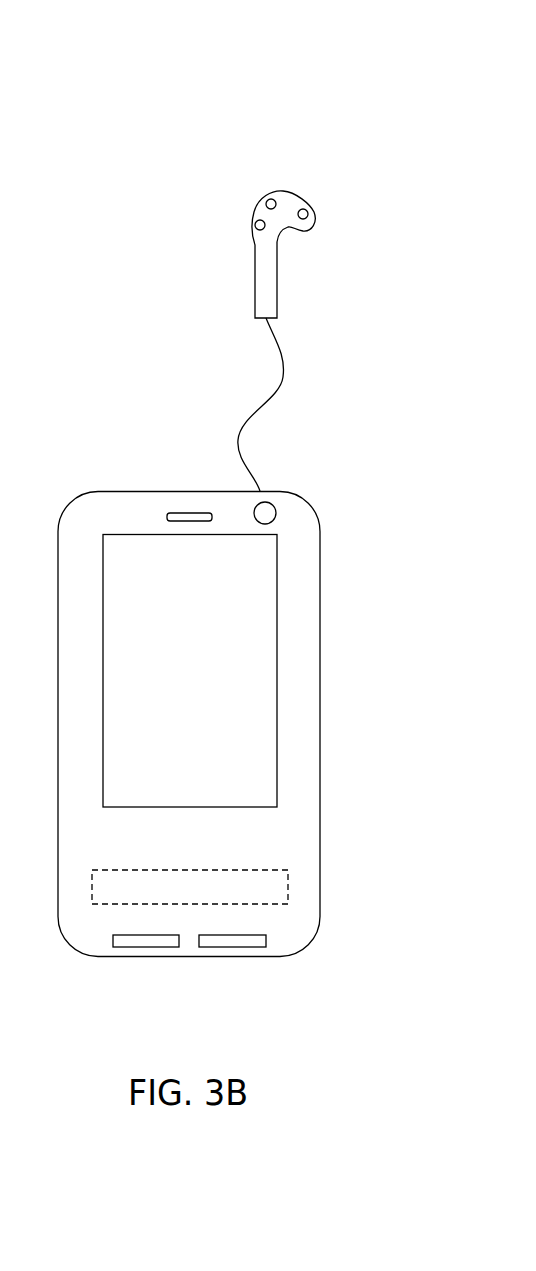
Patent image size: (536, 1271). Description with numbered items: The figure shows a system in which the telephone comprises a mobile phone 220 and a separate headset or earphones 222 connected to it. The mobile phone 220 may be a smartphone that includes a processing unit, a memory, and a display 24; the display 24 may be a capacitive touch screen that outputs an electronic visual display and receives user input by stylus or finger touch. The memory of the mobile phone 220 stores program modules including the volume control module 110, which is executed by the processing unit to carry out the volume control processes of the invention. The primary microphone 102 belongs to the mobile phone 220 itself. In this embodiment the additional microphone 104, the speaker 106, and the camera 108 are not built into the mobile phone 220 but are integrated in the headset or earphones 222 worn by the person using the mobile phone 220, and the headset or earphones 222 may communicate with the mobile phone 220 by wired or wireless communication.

The mobile phone 220 is at (128, 492).
The headset or earphones 222 is at (296, 177).
The additional microphone 104 is at (267, 200).
The speaker 106 is at (308, 214).
The camera 108 is at (255, 224).
The display 24 is at (277, 682).
The volume control module 110 is at (288, 892).
The primary microphone 102 is at (153, 947).